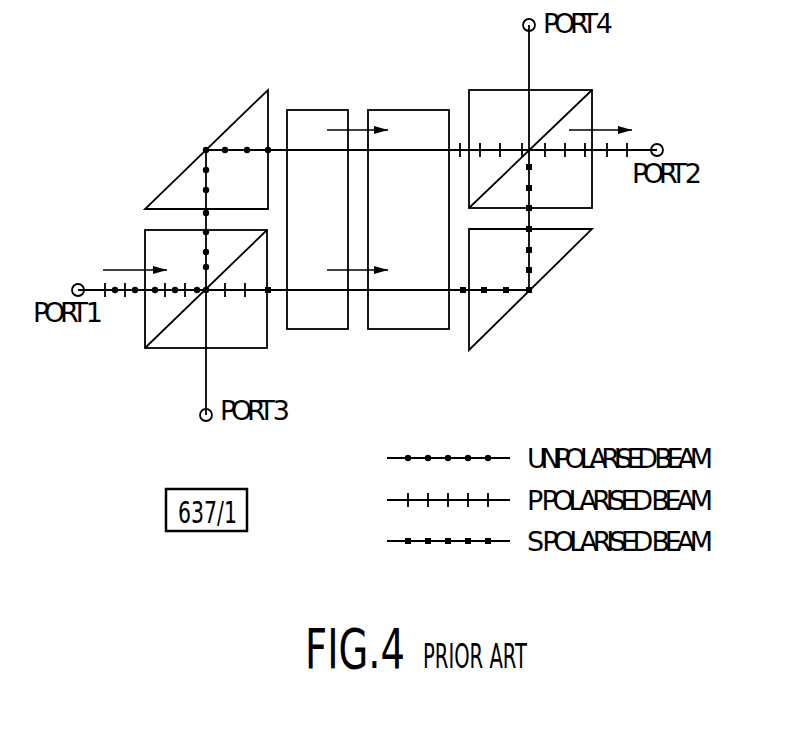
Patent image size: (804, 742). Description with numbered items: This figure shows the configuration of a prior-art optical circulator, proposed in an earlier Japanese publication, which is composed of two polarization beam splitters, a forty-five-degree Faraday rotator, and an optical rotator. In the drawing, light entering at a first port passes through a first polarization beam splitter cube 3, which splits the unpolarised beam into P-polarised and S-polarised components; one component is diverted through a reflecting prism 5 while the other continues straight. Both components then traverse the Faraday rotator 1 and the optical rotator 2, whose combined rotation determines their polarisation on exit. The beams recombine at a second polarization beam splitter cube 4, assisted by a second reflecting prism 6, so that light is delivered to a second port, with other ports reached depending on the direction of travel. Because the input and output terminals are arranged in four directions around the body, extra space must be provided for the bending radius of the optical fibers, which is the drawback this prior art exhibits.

The first wave plate 1 is at (317, 220).
The second wave plate 2 is at (408, 220).
The polarising beam splitter cube 3 is at (206, 289).
The polarising beam splitter cube 4 is at (530, 149).
The reflecting prism 5 is at (206, 150).
The reflecting prism 6 is at (530, 289).